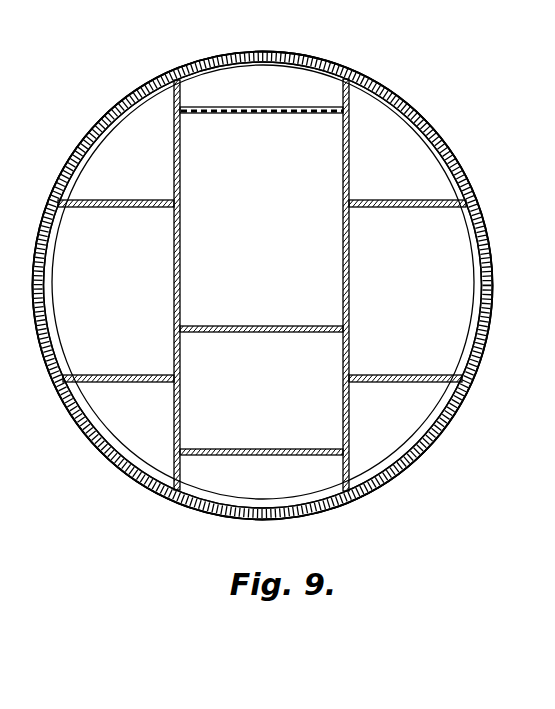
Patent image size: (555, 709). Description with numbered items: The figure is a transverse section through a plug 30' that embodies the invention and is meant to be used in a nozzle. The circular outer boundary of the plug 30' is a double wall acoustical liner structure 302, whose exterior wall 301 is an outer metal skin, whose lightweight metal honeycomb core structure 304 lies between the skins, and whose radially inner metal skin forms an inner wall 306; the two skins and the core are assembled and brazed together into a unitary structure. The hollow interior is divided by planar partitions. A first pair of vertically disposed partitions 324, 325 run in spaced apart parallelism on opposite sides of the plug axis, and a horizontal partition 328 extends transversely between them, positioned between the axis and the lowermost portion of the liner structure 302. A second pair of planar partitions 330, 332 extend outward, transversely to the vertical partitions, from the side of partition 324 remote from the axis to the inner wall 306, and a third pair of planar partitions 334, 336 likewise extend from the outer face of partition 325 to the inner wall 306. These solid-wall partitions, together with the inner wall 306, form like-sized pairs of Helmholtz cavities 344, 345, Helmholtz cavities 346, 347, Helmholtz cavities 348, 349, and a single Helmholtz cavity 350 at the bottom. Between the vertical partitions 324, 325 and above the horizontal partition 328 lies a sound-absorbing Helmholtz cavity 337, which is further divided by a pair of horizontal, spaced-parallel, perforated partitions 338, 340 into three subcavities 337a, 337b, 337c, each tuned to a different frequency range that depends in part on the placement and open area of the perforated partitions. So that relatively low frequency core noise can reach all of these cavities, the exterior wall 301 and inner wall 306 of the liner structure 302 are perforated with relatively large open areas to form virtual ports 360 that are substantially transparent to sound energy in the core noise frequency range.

The plug 30' is at (266, 286).
The exterior wall 301 is at (336, 61).
The double wall acoustical liner structure 302 is at (489, 228).
The honeycomb core structure 304 is at (539, 176).
The inner wall 306 is at (382, 108).
The vertically disposed partition 324 is at (181, 284).
The vertically disposed partition 325 is at (350, 250).
The horizontal partition 328 is at (212, 456).
The planar partition 330 is at (120, 200).
The planar partition 332 is at (110, 375).
The planar partition 334 is at (420, 200).
The planar partition 336 is at (398, 375).
The Helmholtz cavity 337 is at (279, 249).
The subcavity 337a is at (247, 94).
The subcavity 337b is at (247, 191).
The subcavity 337c is at (247, 416).
The perforated partition 338 is at (258, 113).
The perforated partition 340 is at (272, 333).
The Helmholtz cavity 344 is at (127, 294).
The Helmholtz cavity 345 is at (398, 294).
The Helmholtz cavity 346 is at (145, 161).
The Helmholtz cavity 347 is at (402, 159).
The Helmholtz cavity 348 is at (117, 424).
The Helmholtz cavity 349 is at (373, 424).
The Helmholtz cavity 350 is at (279, 486).
The virtual port 360 is at (270, 51).